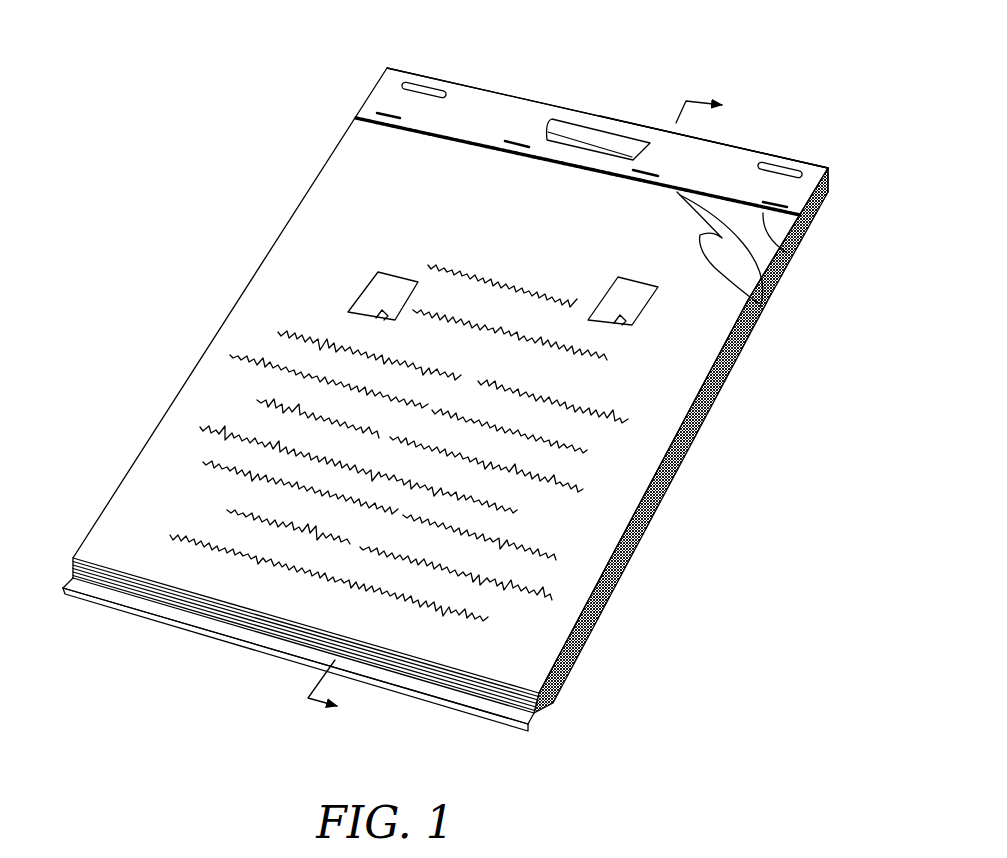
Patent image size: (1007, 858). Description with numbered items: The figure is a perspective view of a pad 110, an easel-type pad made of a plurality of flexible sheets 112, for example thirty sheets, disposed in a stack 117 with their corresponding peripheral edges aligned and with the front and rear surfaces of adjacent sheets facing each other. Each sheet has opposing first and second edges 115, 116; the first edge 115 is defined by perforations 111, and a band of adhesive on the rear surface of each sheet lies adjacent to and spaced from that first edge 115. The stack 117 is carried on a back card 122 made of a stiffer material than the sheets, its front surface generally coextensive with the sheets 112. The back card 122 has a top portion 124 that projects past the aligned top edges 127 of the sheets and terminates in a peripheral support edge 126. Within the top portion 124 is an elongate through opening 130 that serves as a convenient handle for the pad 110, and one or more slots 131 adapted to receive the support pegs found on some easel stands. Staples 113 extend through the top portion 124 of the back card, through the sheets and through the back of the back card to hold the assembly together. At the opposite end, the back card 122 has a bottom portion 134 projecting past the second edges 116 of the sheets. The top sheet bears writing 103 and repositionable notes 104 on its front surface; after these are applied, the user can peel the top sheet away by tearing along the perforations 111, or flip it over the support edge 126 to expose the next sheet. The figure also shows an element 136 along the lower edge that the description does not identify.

The pad 110 is at (451, 373).
The writing 103 is at (317, 334).
The repositionable notes 104 is at (383, 293).
The perforations 111 is at (787, 253).
The flexible sheets 112 is at (605, 535).
The staples 113 is at (387, 109).
The first edge 115 is at (760, 300).
The second edge 116 is at (70, 563).
The stack 117 is at (537, 630).
The back card 122 is at (470, 90).
The top portion 124 is at (502, 115).
The peripheral support edge 126 is at (631, 120).
The top edges 127 is at (829, 186).
The elongate through opening 130 is at (578, 136).
The slots 131 is at (416, 78).
The bottom portion 134 is at (125, 603).
The backing board 136 is at (212, 642).